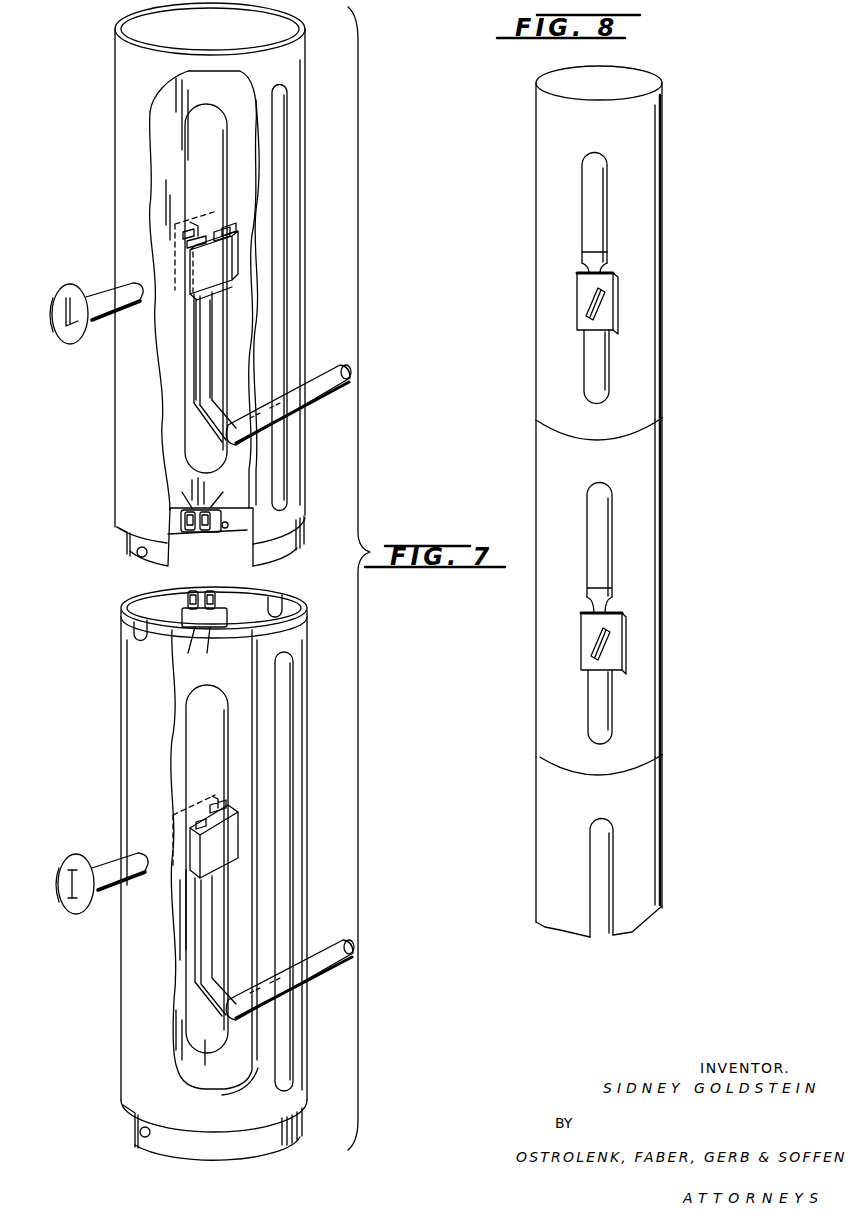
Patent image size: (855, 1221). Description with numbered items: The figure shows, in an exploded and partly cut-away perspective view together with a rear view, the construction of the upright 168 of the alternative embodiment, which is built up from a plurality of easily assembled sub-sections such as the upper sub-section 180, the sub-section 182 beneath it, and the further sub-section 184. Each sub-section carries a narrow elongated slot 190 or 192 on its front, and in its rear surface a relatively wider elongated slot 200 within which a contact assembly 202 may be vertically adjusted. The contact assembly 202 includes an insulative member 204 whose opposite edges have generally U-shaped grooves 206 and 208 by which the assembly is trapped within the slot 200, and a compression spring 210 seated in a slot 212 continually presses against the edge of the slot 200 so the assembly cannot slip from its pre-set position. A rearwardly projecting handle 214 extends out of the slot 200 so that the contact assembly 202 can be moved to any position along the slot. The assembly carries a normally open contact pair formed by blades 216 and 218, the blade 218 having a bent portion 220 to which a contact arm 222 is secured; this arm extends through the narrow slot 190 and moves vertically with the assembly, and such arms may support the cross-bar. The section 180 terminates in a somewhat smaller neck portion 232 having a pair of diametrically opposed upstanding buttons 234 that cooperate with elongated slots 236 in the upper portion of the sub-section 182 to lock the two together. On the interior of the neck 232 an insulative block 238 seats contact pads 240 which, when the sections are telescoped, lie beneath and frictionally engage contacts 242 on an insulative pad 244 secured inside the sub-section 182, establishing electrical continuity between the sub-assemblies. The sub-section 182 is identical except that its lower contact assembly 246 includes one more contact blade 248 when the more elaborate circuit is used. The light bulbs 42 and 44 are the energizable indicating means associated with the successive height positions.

In FIG. 7, the upright 168 is at (113, 55).
In FIG. 7, the sub-section 180 is at (114, 132).
In FIG. 8, the sub-section 180 is at (661, 145).
In FIG. 7, the sub-section 182 is at (119, 712).
In FIG. 8, the sub-section 182 is at (664, 535).
In FIG. 8, the sub-section 184 is at (669, 852).
In FIG. 7, the elongated slot 190 is at (282, 236).
In FIG. 7, the elongated slot 192 is at (286, 766).
In FIG. 7, the elongated slot 200 is at (184, 160).
In FIG. 8, the elongated slot 200 is at (606, 210).
In FIG. 7, the contact assembly 202 is at (221, 268).
In FIG. 8, the contact assembly 202 is at (617, 313).
In FIG. 7, the insulative member 204 is at (196, 362).
In FIG. 8, the insulative member 204 is at (596, 253).
In FIG. 7, the U-shaped groove 206 is at (197, 295).
In FIG. 8, the U-shaped groove 206 is at (580, 268).
In FIG. 7, the U-shaped groove 208 is at (227, 232).
In FIG. 8, the U-shaped groove 208 is at (612, 270).
In FIG. 7, the compression spring 210 is at (188, 249).
In FIG. 7, the slot 212 is at (186, 236).
In FIG. 7, the handle 214 is at (199, 222).
In FIG. 8, the handle 214 is at (583, 308).
In FIG. 7, the contact blade 216 is at (197, 361).
In FIG. 7, the contact blade 218 is at (204, 381).
In FIG. 7, the bent portion 220 is at (211, 423).
In FIG. 7, the contact arm 222 is at (326, 378).
In FIG. 7, the neck portion 232 is at (126, 537).
In FIG. 7, the button 234 is at (139, 559).
In FIG. 7, the elongated slot 236 is at (137, 627).
In FIG. 7, the insulative block 238 is at (226, 530).
In FIG. 7, the contact pad 240 is at (193, 534).
In FIG. 7, the contact 242 is at (205, 583).
In FIG. 7, the insulative pad 244 is at (229, 613).
In FIG. 7, the lower contact assembly 246 is at (223, 843).
In FIG. 7, the contact blade 248 is at (195, 935).
In FIG. 7, the light bulb 42 is at (77, 283).
In FIG. 7, the light bulb 44 is at (89, 857).